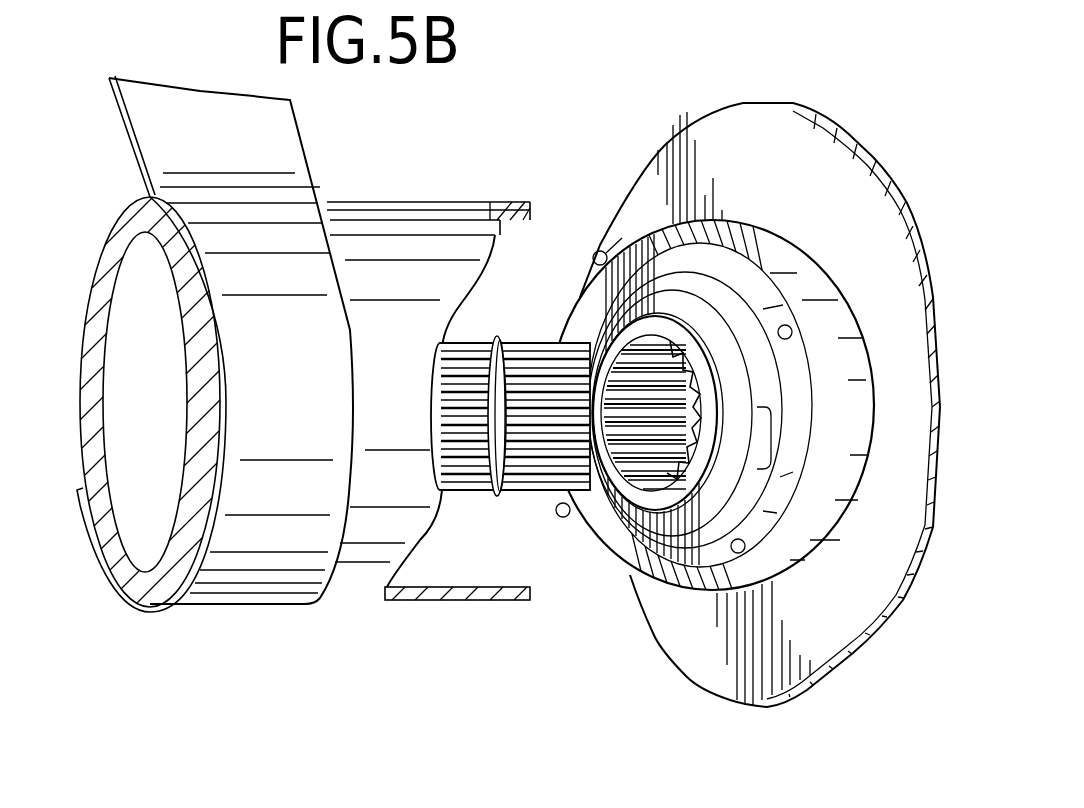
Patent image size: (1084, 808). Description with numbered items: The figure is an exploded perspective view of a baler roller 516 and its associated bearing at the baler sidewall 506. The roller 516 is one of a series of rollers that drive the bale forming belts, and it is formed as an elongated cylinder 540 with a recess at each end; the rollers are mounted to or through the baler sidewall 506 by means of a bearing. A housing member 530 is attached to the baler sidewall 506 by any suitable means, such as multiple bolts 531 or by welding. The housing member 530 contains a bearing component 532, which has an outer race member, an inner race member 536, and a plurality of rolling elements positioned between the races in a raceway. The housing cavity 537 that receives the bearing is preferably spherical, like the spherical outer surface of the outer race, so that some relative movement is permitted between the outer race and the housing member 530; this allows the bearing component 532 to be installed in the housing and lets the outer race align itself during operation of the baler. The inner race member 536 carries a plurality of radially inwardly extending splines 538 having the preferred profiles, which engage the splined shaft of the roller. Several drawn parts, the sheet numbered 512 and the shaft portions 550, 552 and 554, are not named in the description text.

The baler sidewall 506 is at (774, 156).
The housing 512 is at (260, 580).
The roller 516 is at (365, 585).
The housing member 530 is at (748, 225).
The bolts 531 is at (792, 332).
The bearing component 532 is at (652, 292).
The inner race member 536 is at (660, 497).
The cavity 537 is at (665, 500).
The splines 538 is at (644, 500).
The elongated cylinder 540 is at (412, 222).
The shaft 550 is at (520, 492).
The external spline 552 is at (538, 363).
The retaining collar 554 is at (478, 493).